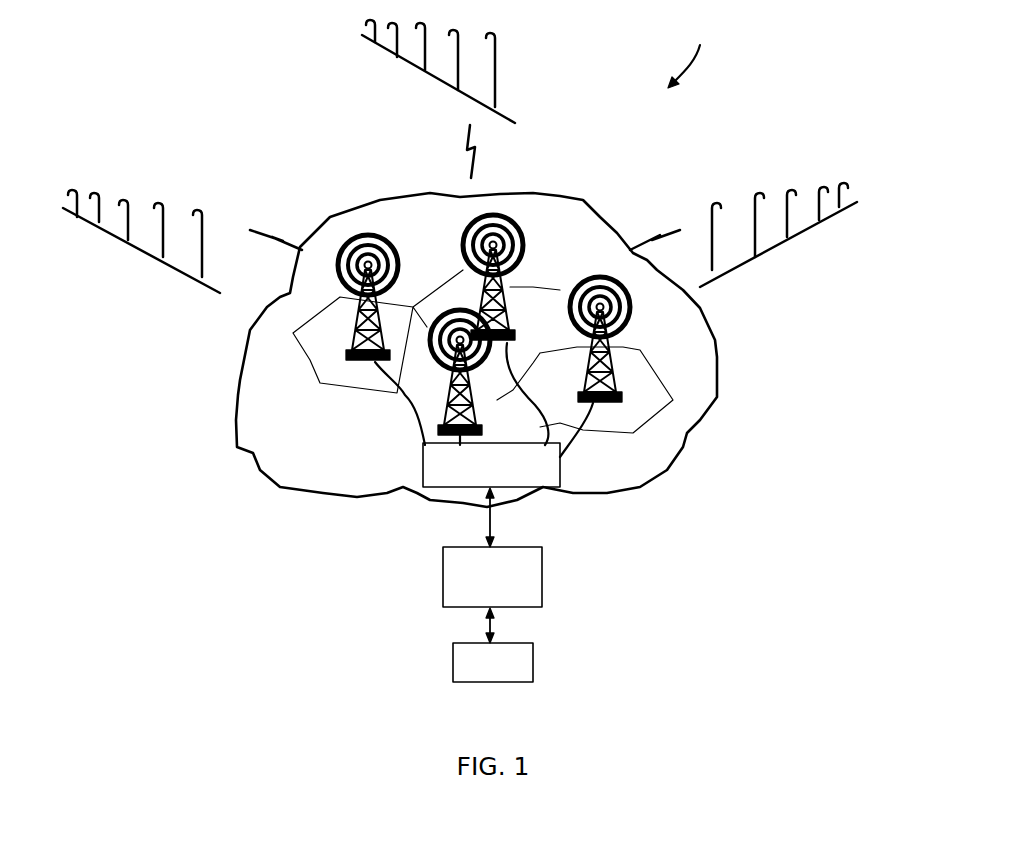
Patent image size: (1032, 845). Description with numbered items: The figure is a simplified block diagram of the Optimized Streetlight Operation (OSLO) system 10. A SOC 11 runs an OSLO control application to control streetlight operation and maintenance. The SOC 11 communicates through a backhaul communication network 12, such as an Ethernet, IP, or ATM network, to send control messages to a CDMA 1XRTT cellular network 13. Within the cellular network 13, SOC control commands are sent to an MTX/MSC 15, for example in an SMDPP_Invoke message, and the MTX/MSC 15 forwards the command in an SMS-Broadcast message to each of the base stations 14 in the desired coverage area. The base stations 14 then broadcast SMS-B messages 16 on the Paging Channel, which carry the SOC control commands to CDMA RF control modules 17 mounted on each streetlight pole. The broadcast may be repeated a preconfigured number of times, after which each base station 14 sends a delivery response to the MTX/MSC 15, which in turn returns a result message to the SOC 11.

The Optimized Streetlight Operation (OSLO) system 10 is at (693, 54).
The SOC 11 is at (533, 667).
The backhaul communication network 12 is at (545, 577).
The CDMA 1XRTT cellular network 13 is at (310, 493).
The Base Stations (BSs) 14 is at (560, 320).
The MTX/MSC 15 is at (560, 477).
The SMS-B messages 16 is at (483, 156).
The CDMA RF control modules 17 is at (135, 208).